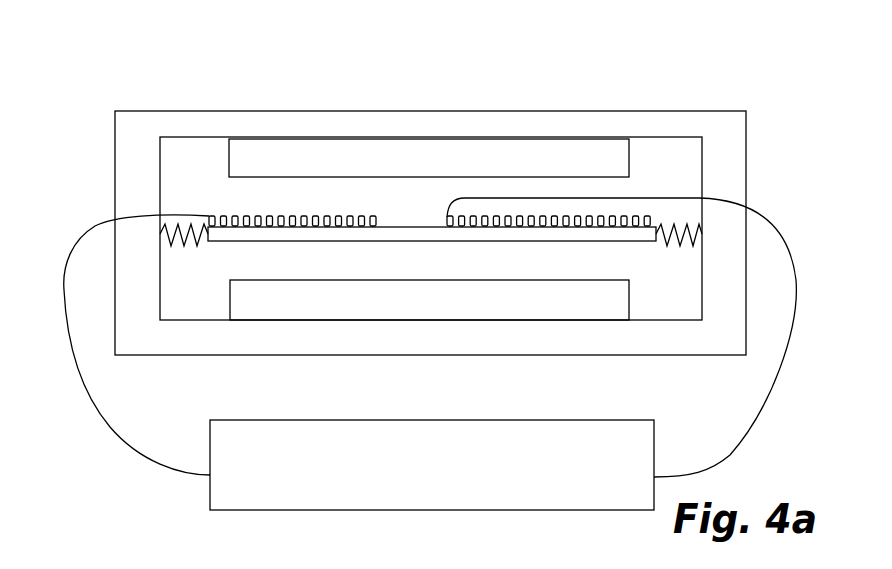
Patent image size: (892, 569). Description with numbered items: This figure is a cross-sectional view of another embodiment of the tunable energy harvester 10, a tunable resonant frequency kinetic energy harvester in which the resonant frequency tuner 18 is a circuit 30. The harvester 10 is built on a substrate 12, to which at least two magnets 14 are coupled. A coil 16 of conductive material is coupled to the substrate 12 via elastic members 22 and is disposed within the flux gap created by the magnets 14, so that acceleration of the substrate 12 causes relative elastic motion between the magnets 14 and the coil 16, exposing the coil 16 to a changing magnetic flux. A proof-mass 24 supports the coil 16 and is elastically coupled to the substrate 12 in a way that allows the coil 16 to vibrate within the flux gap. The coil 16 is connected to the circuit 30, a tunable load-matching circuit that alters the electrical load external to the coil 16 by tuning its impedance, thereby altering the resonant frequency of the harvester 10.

The tunable energy harvester 10 is at (116, 40).
The substrate 12 is at (668, 120).
The magnets 14 is at (366, 152).
The coil 16 is at (222, 215).
The resonant frequency tuner 18 is at (490, 420).
The elastic members 22 is at (178, 245).
The proof-mass 24 is at (427, 241).
The circuit 30 is at (432, 465).